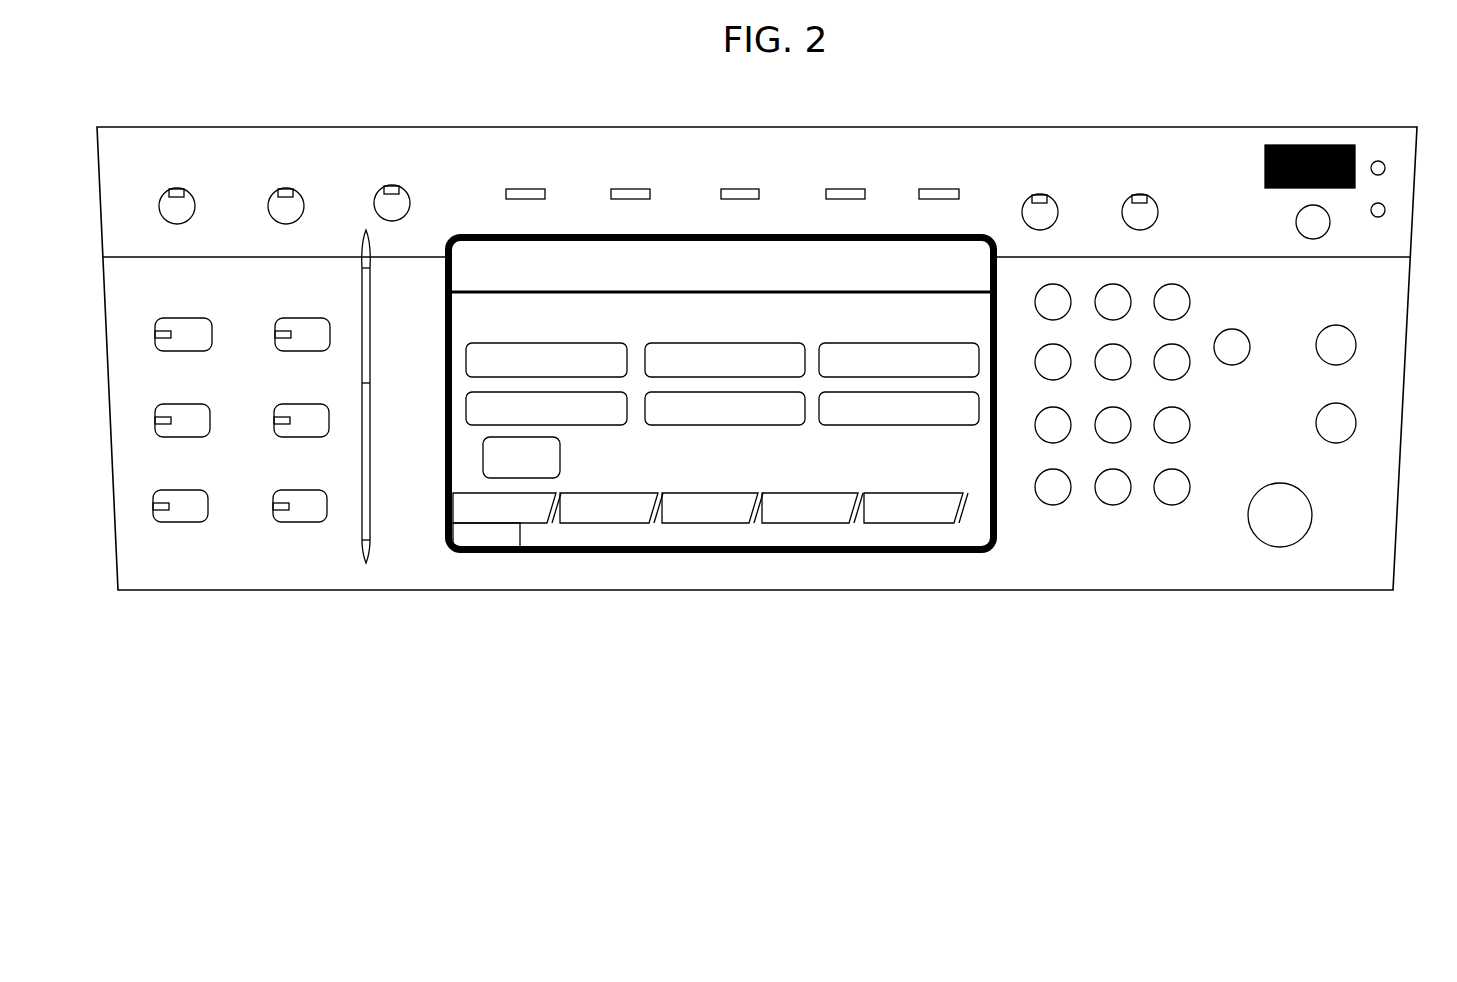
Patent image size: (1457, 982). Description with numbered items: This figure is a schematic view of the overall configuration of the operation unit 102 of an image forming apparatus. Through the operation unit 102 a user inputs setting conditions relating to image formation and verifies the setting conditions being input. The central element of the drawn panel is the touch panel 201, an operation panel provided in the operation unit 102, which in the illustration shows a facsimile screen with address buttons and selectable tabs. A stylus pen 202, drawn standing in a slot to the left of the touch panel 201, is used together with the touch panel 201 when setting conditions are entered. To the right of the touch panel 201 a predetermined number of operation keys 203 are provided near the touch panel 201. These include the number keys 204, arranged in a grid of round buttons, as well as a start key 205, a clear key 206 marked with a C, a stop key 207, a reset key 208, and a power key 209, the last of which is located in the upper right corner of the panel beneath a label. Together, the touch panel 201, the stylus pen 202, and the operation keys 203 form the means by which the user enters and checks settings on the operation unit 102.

The operation unit 102 is at (775, 403).
The touch panel 201 is at (554, 572).
The stylus pen 202 is at (366, 563).
The operation key 203 is at (1187, 482).
The number keys 204 is at (1167, 530).
The start key 205 is at (1280, 527).
The clear key 206 is at (1225, 357).
The stop key 207 is at (1336, 433).
The reset key 208 is at (1339, 356).
The power key 209 is at (1322, 232).